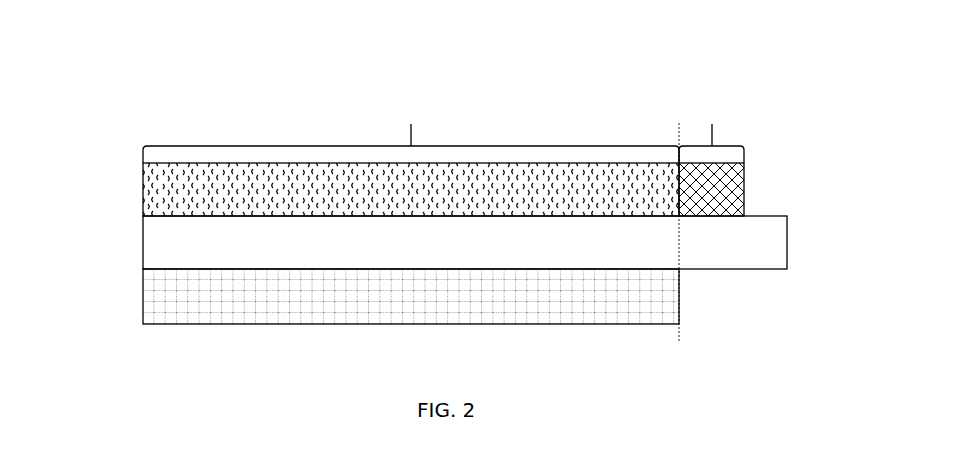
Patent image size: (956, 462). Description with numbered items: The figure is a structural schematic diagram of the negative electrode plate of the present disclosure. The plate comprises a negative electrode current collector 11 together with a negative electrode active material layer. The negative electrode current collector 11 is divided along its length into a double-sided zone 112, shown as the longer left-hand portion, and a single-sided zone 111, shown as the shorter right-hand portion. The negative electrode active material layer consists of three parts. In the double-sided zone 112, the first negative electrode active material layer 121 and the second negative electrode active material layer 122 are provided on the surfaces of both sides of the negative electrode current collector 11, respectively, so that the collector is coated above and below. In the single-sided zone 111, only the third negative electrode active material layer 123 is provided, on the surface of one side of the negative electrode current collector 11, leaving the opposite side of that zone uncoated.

The negative electrode current collector 11 is at (143, 242).
The single-sided zone 111 is at (711, 130).
The double-sided zone 112 is at (411, 128).
The first negative electrode active material layer 121 is at (167, 312).
The second negative electrode active material layer 122 is at (175, 175).
The third negative electrode active material layer 123 is at (724, 182).